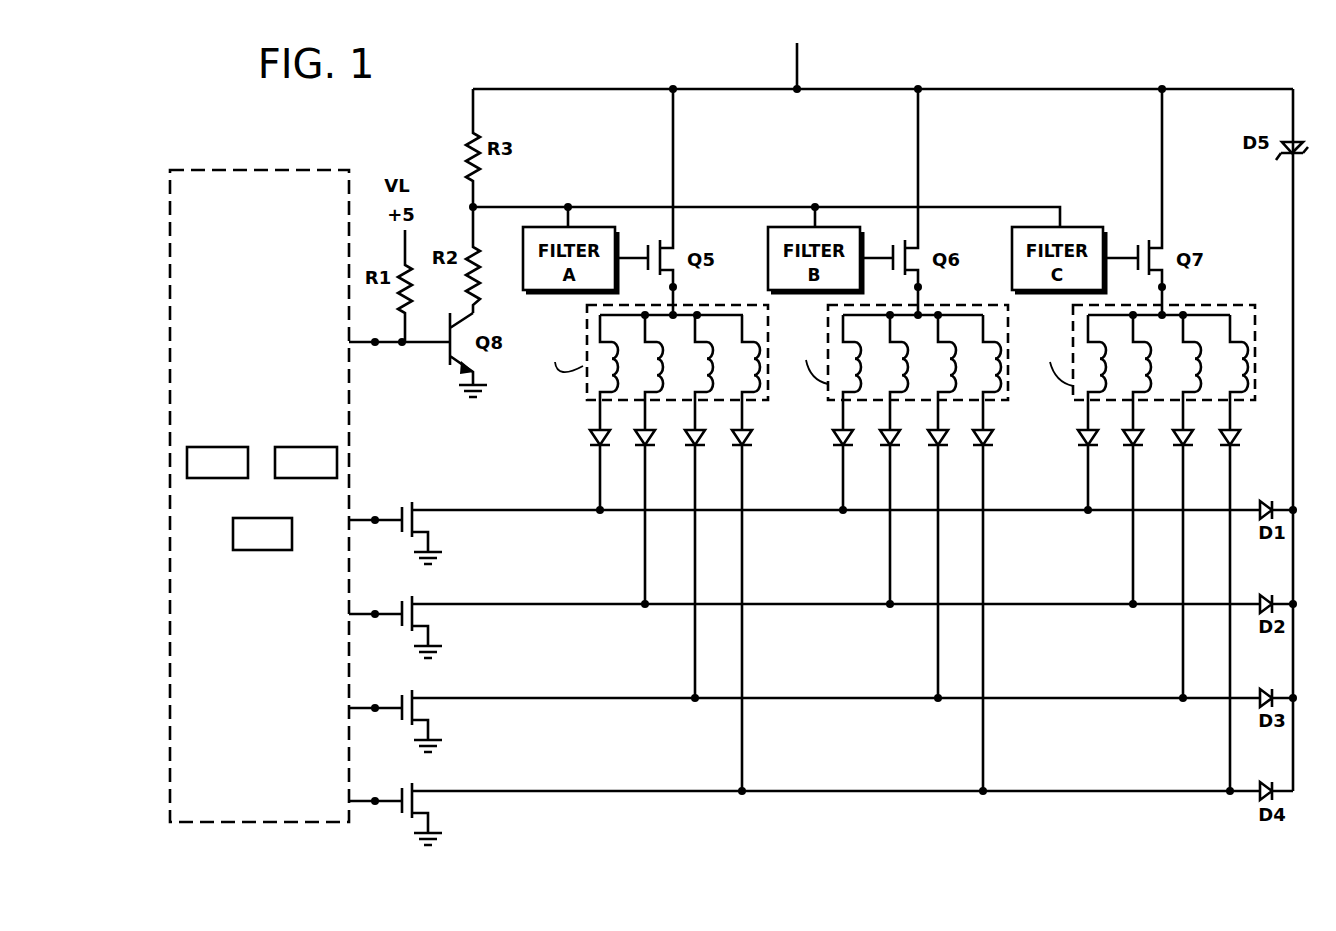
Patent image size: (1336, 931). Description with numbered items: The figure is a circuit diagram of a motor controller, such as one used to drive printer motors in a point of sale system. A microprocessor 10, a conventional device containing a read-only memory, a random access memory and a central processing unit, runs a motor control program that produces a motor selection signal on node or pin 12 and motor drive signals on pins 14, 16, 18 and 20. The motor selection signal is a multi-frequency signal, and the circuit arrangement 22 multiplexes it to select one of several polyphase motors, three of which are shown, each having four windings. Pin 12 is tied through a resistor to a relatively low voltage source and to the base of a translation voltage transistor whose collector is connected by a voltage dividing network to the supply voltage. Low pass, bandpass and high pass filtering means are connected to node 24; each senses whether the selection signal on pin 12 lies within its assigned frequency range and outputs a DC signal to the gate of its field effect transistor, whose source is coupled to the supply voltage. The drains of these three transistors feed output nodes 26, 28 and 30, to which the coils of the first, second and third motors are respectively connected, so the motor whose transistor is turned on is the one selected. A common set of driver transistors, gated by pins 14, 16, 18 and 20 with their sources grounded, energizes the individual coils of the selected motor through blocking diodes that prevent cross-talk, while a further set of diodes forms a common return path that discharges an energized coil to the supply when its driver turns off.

The microprocessor 10 is at (232, 170).
The motor selection signal pin 12 is at (399, 328).
The motor drive signal pin 14 is at (407, 525).
The motor drive signal pin 16 is at (407, 619).
The motor drive signal pin 18 is at (407, 713).
The motor drive signal pin 20 is at (407, 807).
The circuit arrangement 22 is at (604, 61).
The node 24 is at (597, 207).
The output node 26 is at (678, 292).
The output node 28 is at (923, 292).
The output node 30 is at (1167, 292).